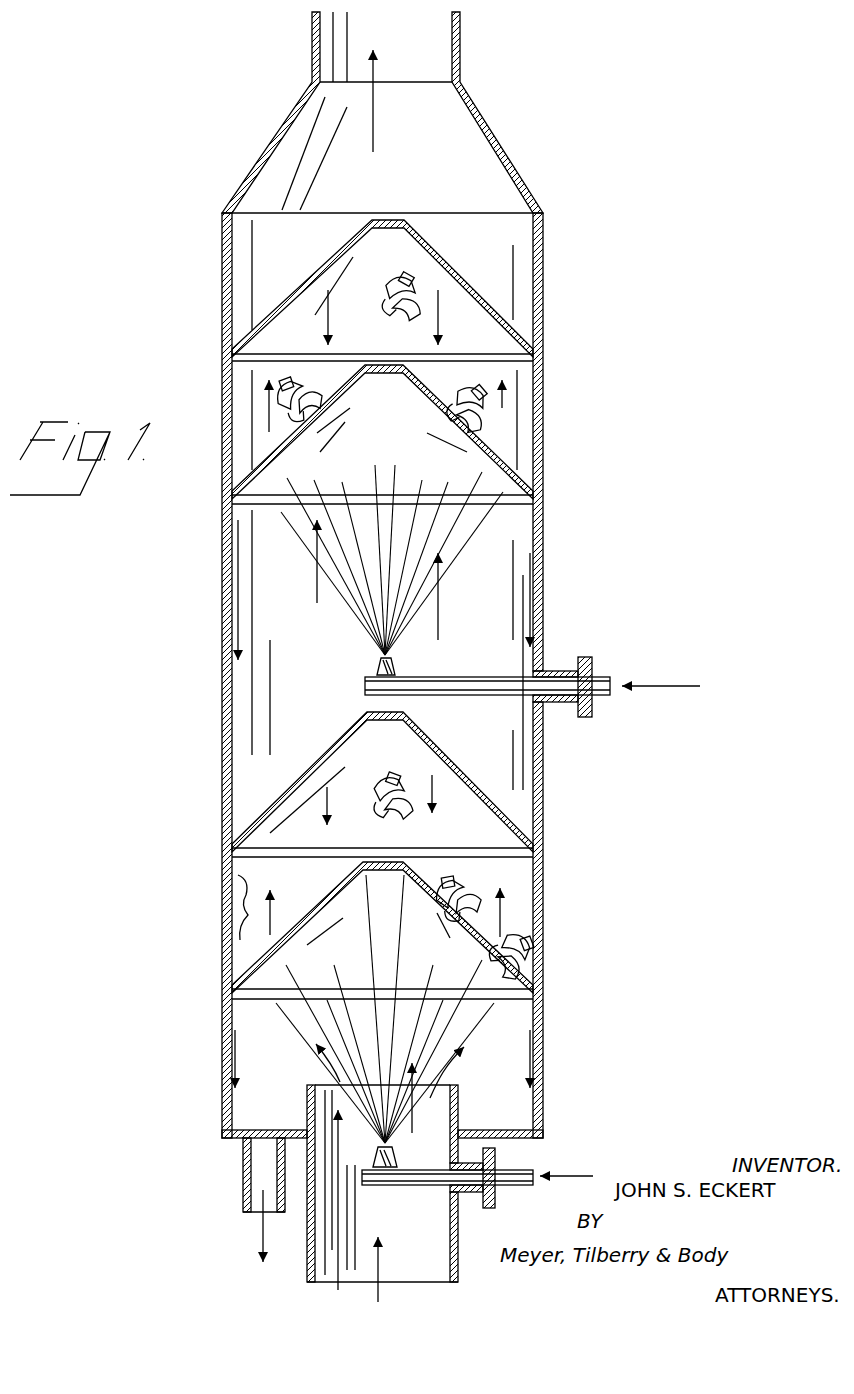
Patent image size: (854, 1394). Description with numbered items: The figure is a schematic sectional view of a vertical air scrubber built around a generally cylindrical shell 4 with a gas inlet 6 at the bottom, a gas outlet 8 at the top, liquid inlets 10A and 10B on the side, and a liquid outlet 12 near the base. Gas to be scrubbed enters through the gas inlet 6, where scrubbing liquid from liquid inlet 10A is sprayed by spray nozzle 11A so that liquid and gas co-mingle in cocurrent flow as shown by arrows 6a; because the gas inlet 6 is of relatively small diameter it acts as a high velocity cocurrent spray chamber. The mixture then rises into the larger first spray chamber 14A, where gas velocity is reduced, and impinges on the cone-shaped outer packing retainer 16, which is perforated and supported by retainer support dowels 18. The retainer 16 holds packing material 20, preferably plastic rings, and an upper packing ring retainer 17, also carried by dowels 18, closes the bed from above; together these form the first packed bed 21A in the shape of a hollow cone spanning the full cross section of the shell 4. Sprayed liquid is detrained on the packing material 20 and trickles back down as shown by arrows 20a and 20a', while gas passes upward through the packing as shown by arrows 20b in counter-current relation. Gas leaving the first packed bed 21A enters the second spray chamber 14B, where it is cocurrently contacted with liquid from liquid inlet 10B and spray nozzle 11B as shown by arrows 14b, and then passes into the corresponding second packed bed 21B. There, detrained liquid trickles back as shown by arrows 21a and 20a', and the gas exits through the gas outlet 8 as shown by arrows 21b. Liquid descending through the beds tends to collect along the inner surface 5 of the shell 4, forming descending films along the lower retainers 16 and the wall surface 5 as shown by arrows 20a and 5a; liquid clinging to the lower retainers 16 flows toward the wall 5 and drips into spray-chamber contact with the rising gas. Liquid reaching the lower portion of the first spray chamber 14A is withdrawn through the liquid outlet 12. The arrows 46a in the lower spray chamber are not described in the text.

The shell 4 is at (543, 590).
The inner surface of shell 5 is at (540, 540).
The arrows showing liquid film along wall 5a is at (240, 625).
The gas inlet 6 is at (323, 1283).
The arrows showing cocurrent flow in gas inlet 6a is at (412, 1121).
The gas outlet 8 is at (460, 43).
The liquid inlet 10A is at (515, 1168).
The liquid inlet 10B is at (517, 700).
The spray nozzle 11A is at (376, 1165).
The spray nozzle 11B is at (373, 670).
The liquid outlet 12 is at (255, 1215).
The first spray chamber 14A is at (405, 987).
The second spray chamber 14B is at (397, 492).
The arrows showing cocurrent contact in upper spray chamber 14b is at (317, 580).
The outer packing retainer 16 is at (283, 510).
The upper packing ring retainer 17 is at (332, 262).
The retainer support dowels 18 is at (512, 376).
The packing material 20 is at (412, 278).
The arrows showing liquid trickling down through packing 20a is at (387, 790).
The arrows showing liquid flow along retainer 20a' is at (387, 688).
The arrows showing upward gas flow through packing 20b is at (274, 907).
The first packed bed 21A is at (396, 762).
The second packed bed 21B is at (393, 349).
The arrows showing detrained liquid trickling through upper bed 21a is at (328, 318).
The arrows showing gas leaving upper bed 21b is at (375, 125).
The spray flow 46a is at (326, 1055).